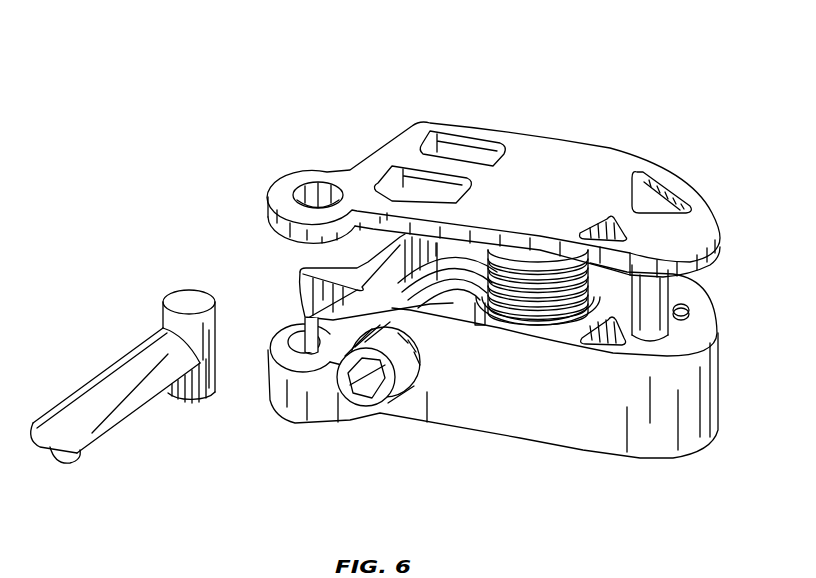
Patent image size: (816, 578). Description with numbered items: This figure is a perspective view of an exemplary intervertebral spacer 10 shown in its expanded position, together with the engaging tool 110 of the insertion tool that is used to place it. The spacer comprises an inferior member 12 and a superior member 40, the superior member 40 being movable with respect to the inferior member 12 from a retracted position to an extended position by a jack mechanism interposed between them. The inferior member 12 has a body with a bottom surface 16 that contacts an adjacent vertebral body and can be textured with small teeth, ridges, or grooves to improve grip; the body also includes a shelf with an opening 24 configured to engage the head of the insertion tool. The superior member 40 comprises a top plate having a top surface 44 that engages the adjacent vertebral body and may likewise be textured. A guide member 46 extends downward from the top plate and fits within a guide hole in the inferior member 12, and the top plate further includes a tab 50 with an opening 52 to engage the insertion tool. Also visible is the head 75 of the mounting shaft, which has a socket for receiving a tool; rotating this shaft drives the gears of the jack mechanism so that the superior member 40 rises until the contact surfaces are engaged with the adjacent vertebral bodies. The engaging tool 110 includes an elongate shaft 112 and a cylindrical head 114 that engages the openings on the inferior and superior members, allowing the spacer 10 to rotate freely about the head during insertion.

The intervertebral spacer 10 is at (327, 57).
The inferior member 12 is at (730, 383).
The bottom surface 16 is at (592, 452).
The opening 24 is at (312, 325).
The superior member 40 is at (643, 118).
The top surface 44 is at (543, 148).
The guide member 46 is at (650, 318).
The tab 50 is at (288, 172).
The opening 52 is at (322, 187).
The head 75 is at (352, 407).
The engaging tool 110 is at (107, 338).
The elongate shaft 112 is at (93, 380).
The cylindrical head 114 is at (188, 298).